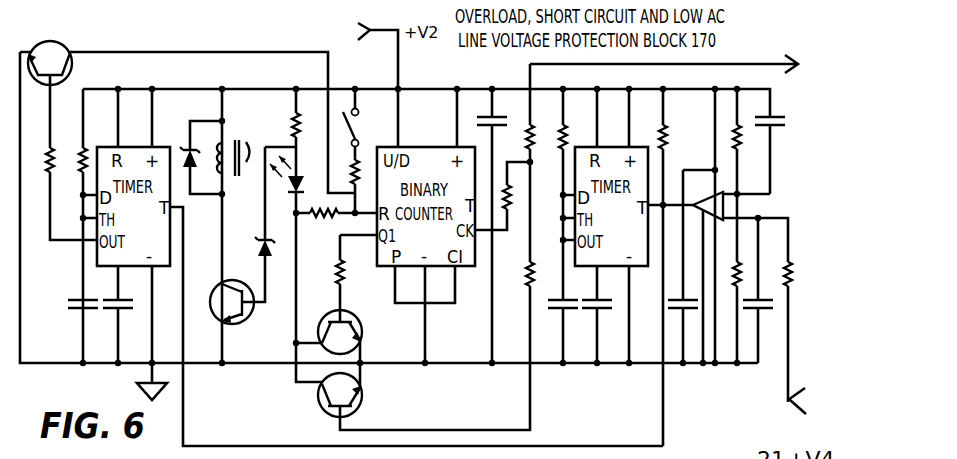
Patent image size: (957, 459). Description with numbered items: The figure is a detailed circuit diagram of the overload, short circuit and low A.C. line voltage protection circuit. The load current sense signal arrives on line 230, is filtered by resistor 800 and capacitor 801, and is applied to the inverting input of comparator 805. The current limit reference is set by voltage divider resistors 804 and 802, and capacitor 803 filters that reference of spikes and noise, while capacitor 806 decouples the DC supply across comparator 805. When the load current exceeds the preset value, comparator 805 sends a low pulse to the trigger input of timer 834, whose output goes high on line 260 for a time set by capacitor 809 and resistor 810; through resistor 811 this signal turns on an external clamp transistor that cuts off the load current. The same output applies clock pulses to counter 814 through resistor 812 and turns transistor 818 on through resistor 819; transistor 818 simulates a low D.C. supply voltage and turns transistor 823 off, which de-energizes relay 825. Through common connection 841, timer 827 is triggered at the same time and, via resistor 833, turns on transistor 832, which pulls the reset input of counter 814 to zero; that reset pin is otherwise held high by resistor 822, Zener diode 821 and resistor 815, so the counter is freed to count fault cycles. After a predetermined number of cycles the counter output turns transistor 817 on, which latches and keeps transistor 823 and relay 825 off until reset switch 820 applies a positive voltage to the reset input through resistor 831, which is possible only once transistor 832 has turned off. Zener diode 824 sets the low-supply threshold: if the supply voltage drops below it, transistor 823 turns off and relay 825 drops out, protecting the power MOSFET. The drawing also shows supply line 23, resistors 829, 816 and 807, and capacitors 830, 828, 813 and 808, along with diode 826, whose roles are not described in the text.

The transistor 832 is at (50, 42).
The resistor 833 is at (44, 160).
The resistor 829 is at (72, 160).
The timer 827 is at (138, 147).
The capacitor 830 is at (66, 304).
The capacitor 828 is at (114, 309).
The zener diode 826 is at (183, 147).
The relay 825 is at (238, 144).
The transistor 823 is at (212, 297).
The Zener diode 824 is at (258, 252).
The resistor 822 is at (290, 127).
The Zener diode 821 is at (283, 200).
The resistor 831 is at (286, 195).
The reset switch 820 is at (362, 125).
The resistor 815 is at (330, 218).
The resistor 816 is at (334, 268).
The transistor 817 is at (362, 332).
The transistor 818 is at (362, 400).
The supply voltage line 23 is at (368, 30).
The counter 814 is at (430, 147).
The capacitor 813 is at (480, 115).
The resistor 811 is at (518, 130).
The resistor 812 is at (516, 200).
The resistor 819 is at (522, 272).
The resistor 810 is at (578, 128).
The capacitor 809 is at (578, 308).
The capacitor 808 is at (600, 310).
The timer 834 is at (613, 147).
The capacitor 806 is at (665, 303).
The resistor 807 is at (670, 133).
The common connection 841 is at (665, 394).
The comparator 805 is at (723, 205).
The resistor 804 is at (742, 145).
The capacitor 803 is at (788, 118).
The line 260 is at (768, 62).
The resistor 800 is at (795, 262).
The resistor 802 is at (745, 278).
The capacitor 801 is at (762, 313).
The load current sense signal line 230 is at (788, 405).